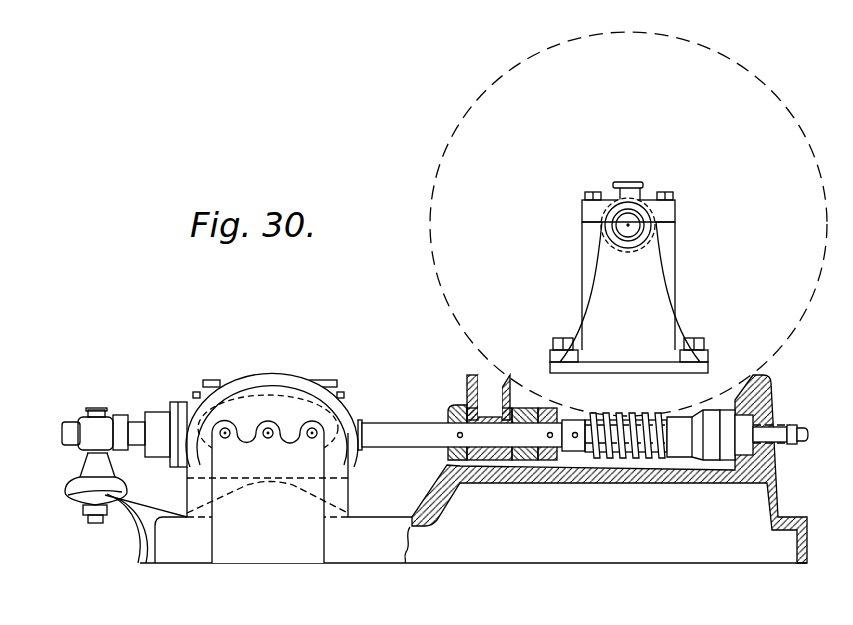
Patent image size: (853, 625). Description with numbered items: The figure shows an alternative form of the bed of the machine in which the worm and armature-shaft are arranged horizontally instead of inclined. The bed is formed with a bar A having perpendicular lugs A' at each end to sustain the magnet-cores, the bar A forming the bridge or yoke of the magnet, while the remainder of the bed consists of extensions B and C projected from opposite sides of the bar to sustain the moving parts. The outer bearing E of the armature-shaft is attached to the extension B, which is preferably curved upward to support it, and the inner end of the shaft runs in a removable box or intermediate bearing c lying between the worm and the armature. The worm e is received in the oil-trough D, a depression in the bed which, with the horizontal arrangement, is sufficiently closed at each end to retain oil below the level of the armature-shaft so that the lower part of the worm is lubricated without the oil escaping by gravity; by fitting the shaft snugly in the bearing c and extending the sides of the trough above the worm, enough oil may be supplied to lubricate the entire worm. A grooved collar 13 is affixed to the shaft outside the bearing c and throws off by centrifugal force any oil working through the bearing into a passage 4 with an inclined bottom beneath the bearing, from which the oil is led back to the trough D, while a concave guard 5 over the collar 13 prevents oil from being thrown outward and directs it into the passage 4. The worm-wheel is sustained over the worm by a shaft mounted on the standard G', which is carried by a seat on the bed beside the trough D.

The standard G' is at (629, 277).
The extension C is at (473, 469).
The bar A is at (283, 540).
The perpendicular lug A' is at (274, 468).
The extension B is at (141, 512).
The bearing E is at (124, 462).
The oil-trough D is at (584, 464).
The worm e is at (633, 414).
The bearing c is at (523, 410).
The passage 4 is at (488, 463).
The concave guard 5 is at (458, 407).
The collar 13 is at (445, 420).